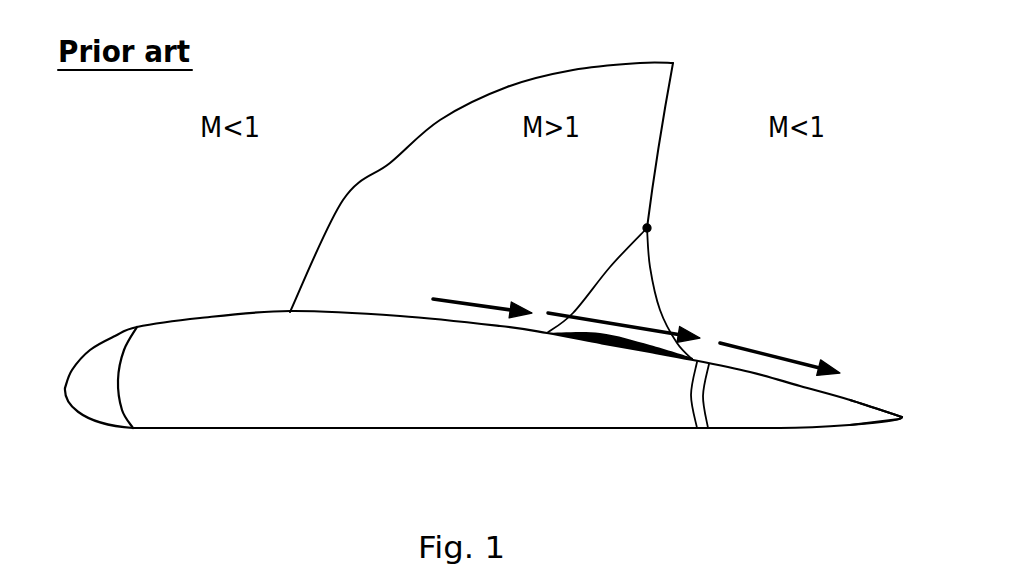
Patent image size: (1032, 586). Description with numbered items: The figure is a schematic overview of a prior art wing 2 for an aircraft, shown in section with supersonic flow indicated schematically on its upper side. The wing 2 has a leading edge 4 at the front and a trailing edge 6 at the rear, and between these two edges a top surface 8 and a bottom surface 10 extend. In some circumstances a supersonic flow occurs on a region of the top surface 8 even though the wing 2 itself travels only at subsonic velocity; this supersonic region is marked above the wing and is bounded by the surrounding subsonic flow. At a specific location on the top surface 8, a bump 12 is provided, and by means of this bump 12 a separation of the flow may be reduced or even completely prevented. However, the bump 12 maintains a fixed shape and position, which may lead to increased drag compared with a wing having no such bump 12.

The wing 2 is at (151, 232).
The leading edge 4 is at (55, 333).
The trailing edge 6 is at (910, 456).
The top surface 8 is at (264, 269).
The bottom surface 10 is at (330, 459).
The bump 12 is at (650, 337).